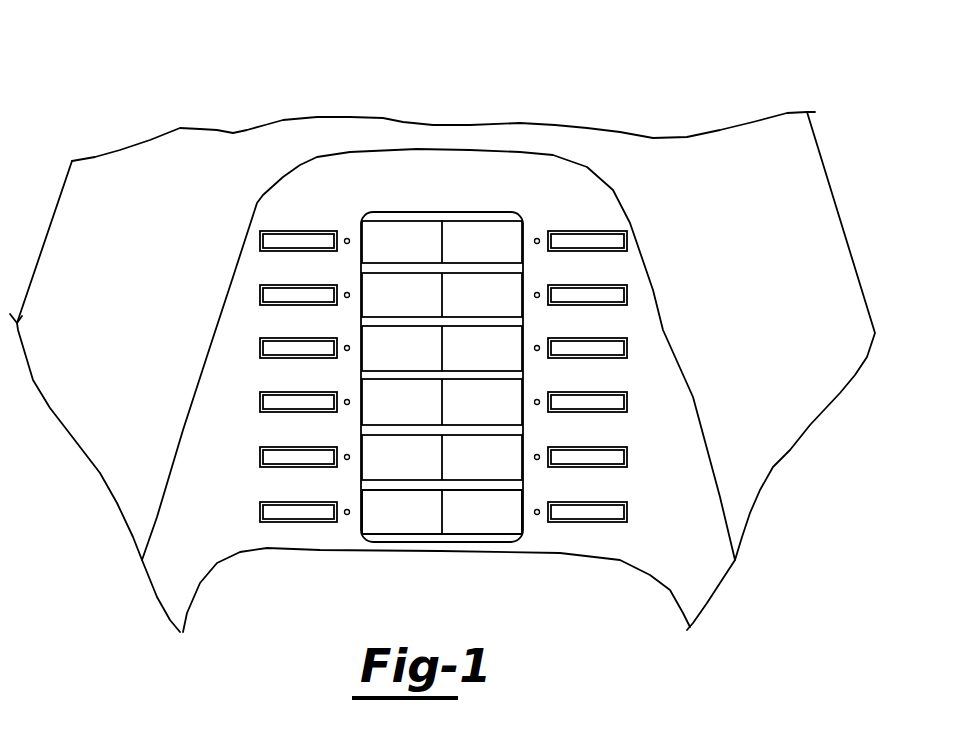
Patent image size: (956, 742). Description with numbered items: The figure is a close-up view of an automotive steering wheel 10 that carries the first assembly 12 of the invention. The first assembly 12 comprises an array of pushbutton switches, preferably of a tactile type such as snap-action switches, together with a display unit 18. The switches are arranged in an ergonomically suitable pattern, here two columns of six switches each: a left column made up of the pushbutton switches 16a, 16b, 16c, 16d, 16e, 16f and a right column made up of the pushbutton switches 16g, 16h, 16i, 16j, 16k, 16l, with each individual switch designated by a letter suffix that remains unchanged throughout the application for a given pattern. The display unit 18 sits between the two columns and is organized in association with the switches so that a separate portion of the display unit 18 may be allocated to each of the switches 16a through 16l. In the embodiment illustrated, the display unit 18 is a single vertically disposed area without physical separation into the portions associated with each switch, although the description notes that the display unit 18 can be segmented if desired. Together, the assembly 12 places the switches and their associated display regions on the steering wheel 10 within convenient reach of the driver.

The automotive steering wheel 10 is at (170, 110).
The first assembly 12 is at (355, 540).
The display unit 18 is at (473, 541).
The pushbutton switch 16a is at (272, 238).
The pushbutton switch 16b is at (272, 292).
The pushbutton switch 16c is at (272, 348).
The pushbutton switch 16d is at (272, 399).
The pushbutton switch 16e is at (272, 455).
The pushbutton switch 16f is at (268, 512).
The pushbutton switch 16g is at (618, 238).
The pushbutton switch 16h is at (620, 296).
The pushbutton switch 16i is at (620, 345).
The pushbutton switch 16j is at (620, 407).
The pushbutton switch 16k is at (620, 458).
The pushbutton switch 16l is at (620, 514).